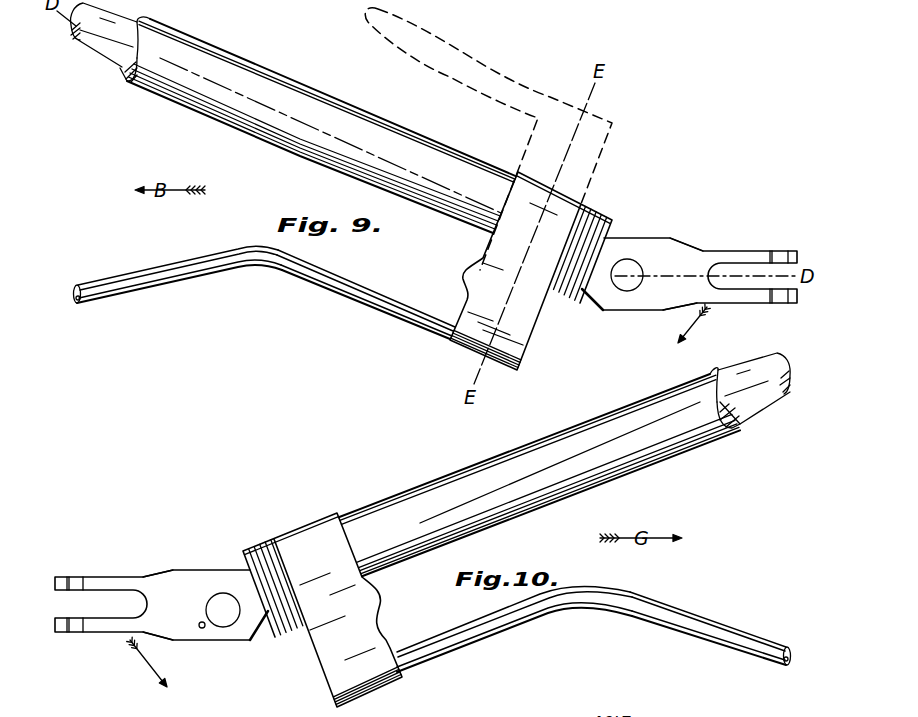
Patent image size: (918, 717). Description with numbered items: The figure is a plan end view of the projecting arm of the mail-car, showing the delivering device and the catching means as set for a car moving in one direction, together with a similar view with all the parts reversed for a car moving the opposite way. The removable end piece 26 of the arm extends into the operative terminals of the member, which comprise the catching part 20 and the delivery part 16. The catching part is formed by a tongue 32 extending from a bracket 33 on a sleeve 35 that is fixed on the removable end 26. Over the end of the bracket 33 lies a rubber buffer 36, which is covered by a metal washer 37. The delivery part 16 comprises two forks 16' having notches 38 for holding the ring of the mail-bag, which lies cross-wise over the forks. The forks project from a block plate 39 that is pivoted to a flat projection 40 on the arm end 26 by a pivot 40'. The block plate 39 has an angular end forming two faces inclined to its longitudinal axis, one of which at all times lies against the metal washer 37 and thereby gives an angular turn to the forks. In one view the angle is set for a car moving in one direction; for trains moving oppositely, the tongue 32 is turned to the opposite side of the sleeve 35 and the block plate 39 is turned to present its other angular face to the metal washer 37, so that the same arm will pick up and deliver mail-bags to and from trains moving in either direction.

In FIG. 9, the fork 16 is at (700, 255).
In FIG. 10, the fork 16 is at (152, 605).
In FIG. 9, the forks 16' is at (785, 272).
In FIG. 10, the forks 16' is at (105, 604).
In FIG. 9, the catching means 20 is at (423, 300).
In FIG. 10, the catching means 20 is at (514, 629).
In FIG. 9, the removable end piece 26 is at (107, 58).
In FIG. 10, the removable end piece 26 is at (760, 400).
In FIG. 9, the tongue 32 is at (228, 267).
In FIG. 10, the tongue 32 is at (673, 628).
In FIG. 9, the bracket 33 is at (520, 323).
In FIG. 10, the bracket 33 is at (322, 610).
In FIG. 9, the sleeve 35 is at (373, 135).
In FIG. 10, the sleeve 35 is at (490, 470).
In FIG. 9, the rubber buffer 36 is at (590, 218).
In FIG. 10, the rubber buffer 36 is at (260, 551).
In FIG. 9, the metal washer 37 is at (602, 234).
In FIG. 10, the metal washer 37 is at (243, 553).
In FIG. 9, the notches 38 is at (772, 257).
In FIG. 10, the notches 38 is at (69, 582).
In FIG. 9, the block plate 39 is at (673, 299).
In FIG. 10, the block plate 39 is at (197, 637).
In FIG. 9, the flat projection 40 is at (595, 319).
In FIG. 10, the flat projection 40 is at (251, 646).
In FIG. 9, the pivot 40' is at (649, 277).
In FIG. 10, the pivot 40' is at (204, 610).